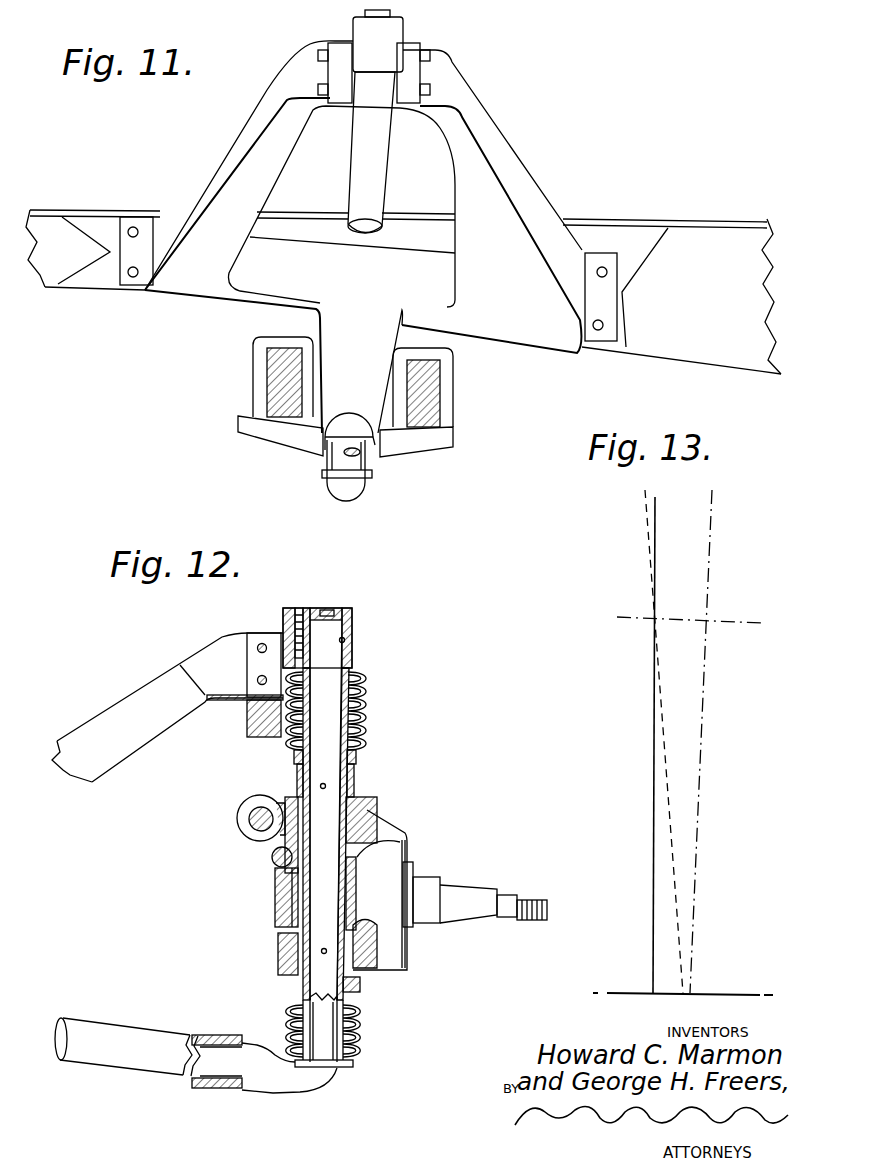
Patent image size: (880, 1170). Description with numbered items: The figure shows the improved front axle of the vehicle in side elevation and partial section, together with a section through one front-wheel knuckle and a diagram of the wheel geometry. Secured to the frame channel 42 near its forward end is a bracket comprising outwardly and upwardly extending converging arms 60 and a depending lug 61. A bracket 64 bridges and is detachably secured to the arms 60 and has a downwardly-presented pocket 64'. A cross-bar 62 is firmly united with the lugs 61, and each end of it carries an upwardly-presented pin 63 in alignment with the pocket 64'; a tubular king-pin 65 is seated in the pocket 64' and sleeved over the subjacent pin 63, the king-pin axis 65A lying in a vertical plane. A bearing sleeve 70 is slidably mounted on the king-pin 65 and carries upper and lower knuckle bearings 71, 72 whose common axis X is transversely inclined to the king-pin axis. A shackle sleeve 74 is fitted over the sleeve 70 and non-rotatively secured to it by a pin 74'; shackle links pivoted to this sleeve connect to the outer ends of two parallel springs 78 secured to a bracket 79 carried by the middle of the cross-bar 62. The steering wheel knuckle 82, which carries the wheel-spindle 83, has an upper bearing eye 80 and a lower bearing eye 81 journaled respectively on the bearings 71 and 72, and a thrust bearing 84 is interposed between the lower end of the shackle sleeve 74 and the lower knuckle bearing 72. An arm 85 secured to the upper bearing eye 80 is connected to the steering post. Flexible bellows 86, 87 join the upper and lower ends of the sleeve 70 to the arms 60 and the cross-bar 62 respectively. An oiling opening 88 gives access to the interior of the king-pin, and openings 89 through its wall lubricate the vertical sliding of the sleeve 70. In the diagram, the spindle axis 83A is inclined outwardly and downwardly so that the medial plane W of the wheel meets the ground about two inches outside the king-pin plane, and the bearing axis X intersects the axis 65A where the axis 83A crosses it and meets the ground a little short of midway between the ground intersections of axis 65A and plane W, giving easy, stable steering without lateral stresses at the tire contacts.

In FIG. 11, the channel 42 is at (48, 214).
In FIG. 11, the converging arms 60 is at (222, 145).
In FIG. 12, the converging arms 60 is at (118, 713).
In FIG. 11, the depending lug 61 is at (333, 398).
In FIG. 11, the cross-bar 62 is at (360, 432).
In FIG. 12, the cross-bar 62 is at (100, 1027).
In FIG. 12, the pin 63 is at (325, 1042).
In FIG. 11, the bracket 64 is at (384, 53).
In FIG. 12, the bracket 64 is at (342, 632).
In FIG. 12, the downwardly-presented pocket 64' is at (371, 647).
In FIG. 11, the tubular king-pin 65 is at (381, 169).
In FIG. 12, the tubular king-pin 65 is at (323, 686).
In FIG. 13, the king-pin axis 65A is at (655, 530).
In FIG. 12, the bearing sleeve 70 is at (370, 852).
In FIG. 12, the upper knuckle bearing 71 is at (290, 797).
In FIG. 12, the lower knuckle bearing 72 is at (358, 980).
In FIG. 12, the shackle sleeve 74 is at (266, 897).
In FIG. 12, the pin 74' is at (256, 870).
In FIG. 11, the parallel springs 78 is at (265, 378).
In FIG. 11, the bracket 79 is at (250, 425).
In FIG. 12, the upper bearing eye 80 is at (358, 813).
In FIG. 12, the lower bearing eye 81 is at (321, 954).
In FIG. 12, the steering wheel knuckle 82 is at (407, 840).
In FIG. 12, the wheel-spindle 83 is at (460, 897).
In FIG. 13, the spindle axis 83A is at (731, 621).
In FIG. 12, the thrust bearing 84 is at (378, 935).
In FIG. 12, the arm 85 is at (250, 840).
In FIG. 12, the upper flexible bellows 86 is at (366, 705).
In FIG. 12, the lower flexible bellows 87 is at (362, 1045).
In FIG. 12, the oiling opening 88 is at (324, 612).
In FIG. 12, the openings 89 is at (326, 784).
In FIG. 13, the bearing axis X is at (653, 528).
In FIG. 13, the medial plane of the steering wheel W is at (705, 672).